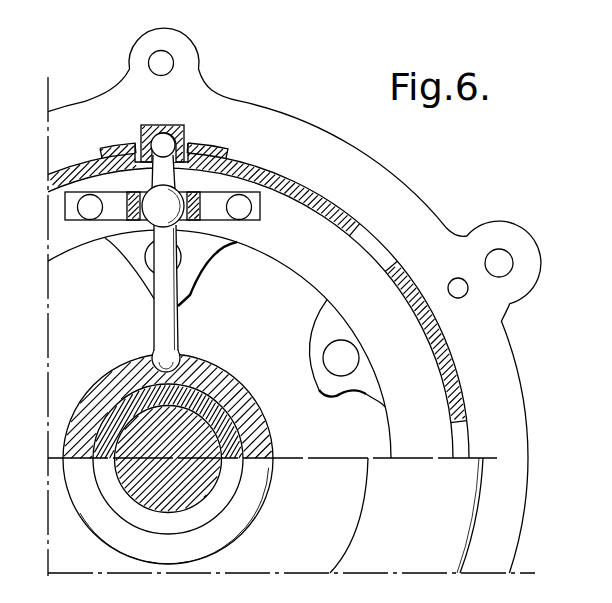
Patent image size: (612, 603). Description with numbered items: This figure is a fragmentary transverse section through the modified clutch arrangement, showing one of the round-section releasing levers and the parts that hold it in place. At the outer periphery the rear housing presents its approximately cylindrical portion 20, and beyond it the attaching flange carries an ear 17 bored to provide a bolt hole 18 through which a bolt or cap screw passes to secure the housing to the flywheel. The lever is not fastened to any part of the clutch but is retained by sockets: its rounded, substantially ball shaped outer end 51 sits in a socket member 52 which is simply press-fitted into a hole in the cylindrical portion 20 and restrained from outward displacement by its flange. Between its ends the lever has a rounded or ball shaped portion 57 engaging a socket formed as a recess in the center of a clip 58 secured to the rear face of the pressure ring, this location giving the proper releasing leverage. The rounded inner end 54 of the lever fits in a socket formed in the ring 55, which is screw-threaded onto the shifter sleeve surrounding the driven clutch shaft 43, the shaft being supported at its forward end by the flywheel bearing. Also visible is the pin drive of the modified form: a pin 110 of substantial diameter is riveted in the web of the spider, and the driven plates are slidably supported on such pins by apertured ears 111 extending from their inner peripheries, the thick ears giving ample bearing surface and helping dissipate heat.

The ears 17 is at (188, 36).
The bolt holes 18 is at (170, 62).
The cylindrical portion 20 is at (258, 288).
The driven clutch shaft 43 is at (188, 488).
The ball shaped outer end 51 is at (167, 143).
The socket member 52 is at (149, 124).
The inner end 54 is at (175, 352).
The ring 55 is at (257, 437).
The ball shaped portion 57 is at (157, 209).
The clips 58 is at (70, 212).
The pins 110 is at (184, 257).
The ears 111 is at (188, 275).